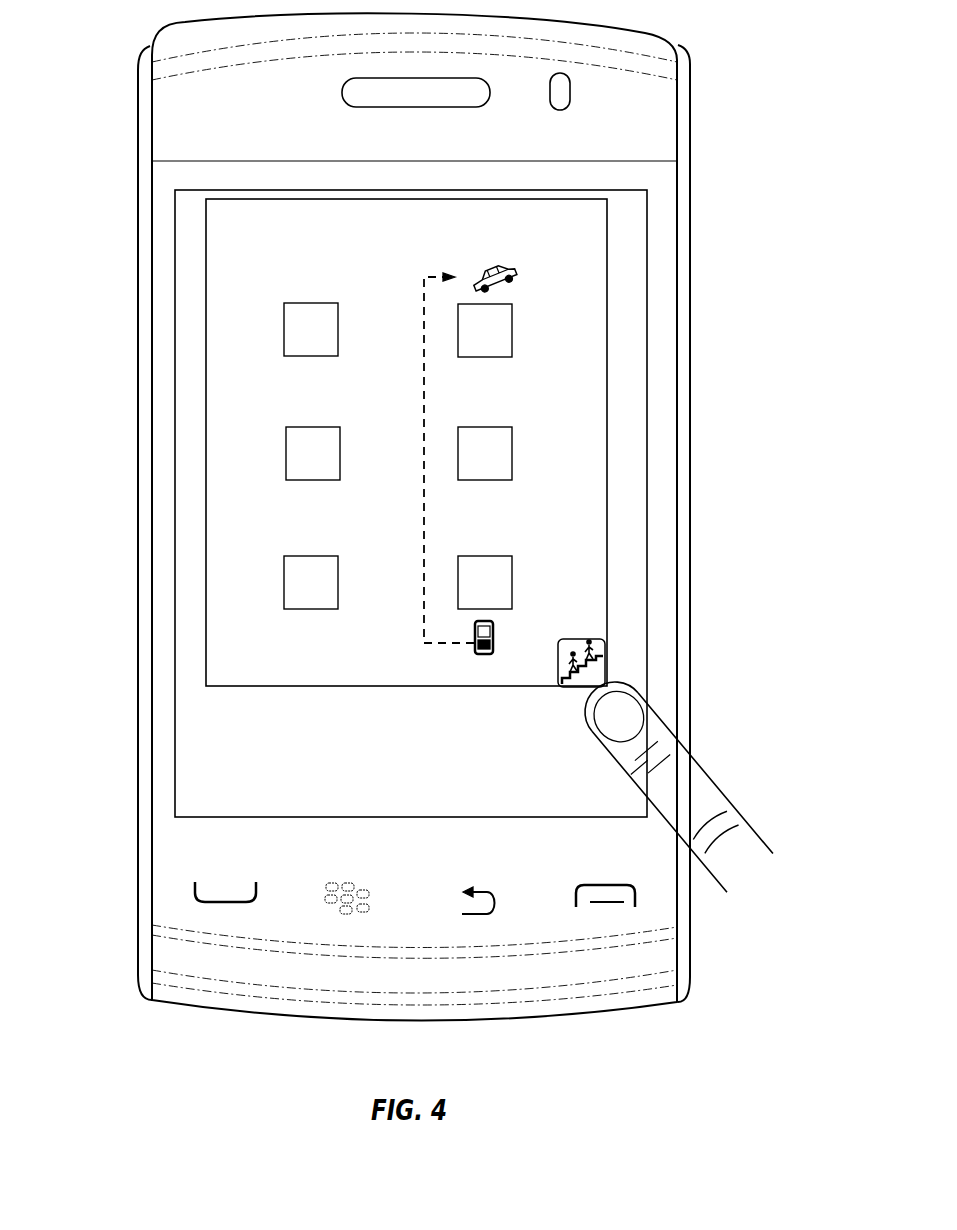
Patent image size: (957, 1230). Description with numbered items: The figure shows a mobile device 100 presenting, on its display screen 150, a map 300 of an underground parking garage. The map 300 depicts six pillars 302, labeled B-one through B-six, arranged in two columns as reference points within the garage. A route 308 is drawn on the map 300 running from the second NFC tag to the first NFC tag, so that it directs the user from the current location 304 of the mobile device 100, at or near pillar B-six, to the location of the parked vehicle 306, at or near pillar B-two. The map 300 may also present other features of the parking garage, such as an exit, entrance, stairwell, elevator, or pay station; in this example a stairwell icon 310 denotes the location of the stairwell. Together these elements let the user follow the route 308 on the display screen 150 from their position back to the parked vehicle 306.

The mobile device 100 is at (712, 121).
The display screen 150 is at (647, 389).
The map 300 is at (335, 442).
The pillars 302 is at (270, 323).
The current location 304 is at (475, 670).
The parked vehicle 306 is at (522, 259).
The route 308 is at (436, 525).
The stairwell icon 310 is at (564, 702).